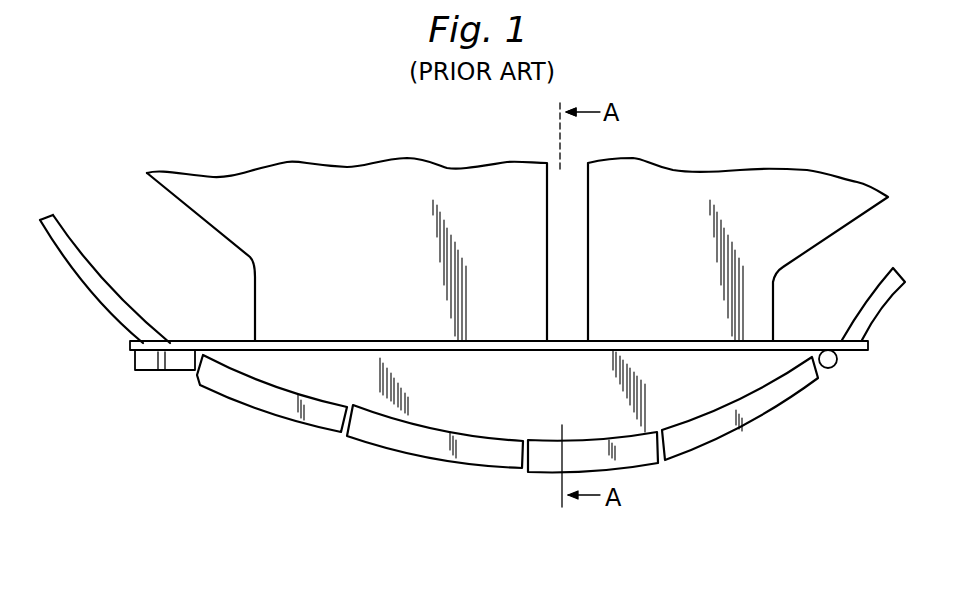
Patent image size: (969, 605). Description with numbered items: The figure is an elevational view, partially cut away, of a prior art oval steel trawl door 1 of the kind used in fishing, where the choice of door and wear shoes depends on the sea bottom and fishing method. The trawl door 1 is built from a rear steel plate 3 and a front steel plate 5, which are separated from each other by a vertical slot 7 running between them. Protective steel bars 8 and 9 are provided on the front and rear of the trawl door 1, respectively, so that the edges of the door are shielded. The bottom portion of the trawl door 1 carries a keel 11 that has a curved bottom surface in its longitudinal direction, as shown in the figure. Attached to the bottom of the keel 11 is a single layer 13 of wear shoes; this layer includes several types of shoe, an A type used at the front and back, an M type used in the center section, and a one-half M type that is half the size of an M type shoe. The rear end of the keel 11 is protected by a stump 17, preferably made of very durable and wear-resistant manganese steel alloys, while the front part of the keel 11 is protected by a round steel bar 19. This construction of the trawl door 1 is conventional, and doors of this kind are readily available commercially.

The oval trawl door 1 is at (517, 223).
The rear steel plate 3 is at (379, 257).
The front steel plate 5 is at (676, 255).
The vertical slot 7 is at (569, 190).
The protective steel bar 8 is at (870, 290).
The protective steel bar 9 is at (97, 270).
The keel 11 is at (508, 400).
The single layer of wear shoes 13 is at (410, 452).
The stump 17 is at (157, 368).
The round steel bar 19 is at (837, 366).